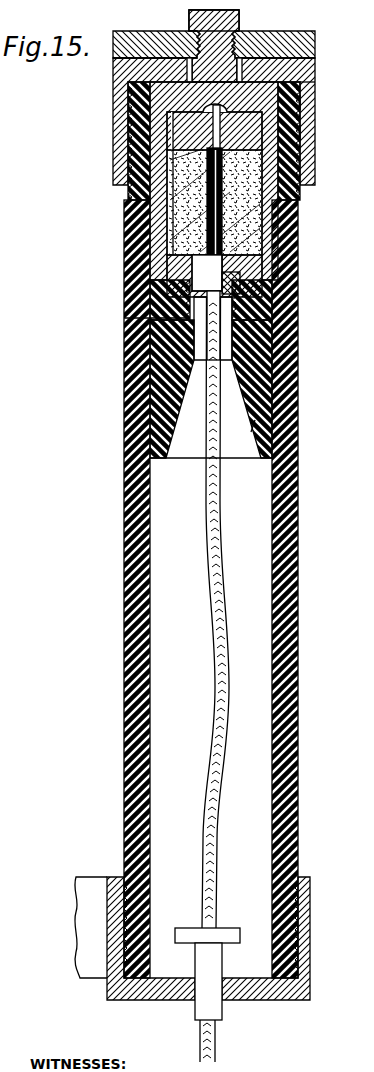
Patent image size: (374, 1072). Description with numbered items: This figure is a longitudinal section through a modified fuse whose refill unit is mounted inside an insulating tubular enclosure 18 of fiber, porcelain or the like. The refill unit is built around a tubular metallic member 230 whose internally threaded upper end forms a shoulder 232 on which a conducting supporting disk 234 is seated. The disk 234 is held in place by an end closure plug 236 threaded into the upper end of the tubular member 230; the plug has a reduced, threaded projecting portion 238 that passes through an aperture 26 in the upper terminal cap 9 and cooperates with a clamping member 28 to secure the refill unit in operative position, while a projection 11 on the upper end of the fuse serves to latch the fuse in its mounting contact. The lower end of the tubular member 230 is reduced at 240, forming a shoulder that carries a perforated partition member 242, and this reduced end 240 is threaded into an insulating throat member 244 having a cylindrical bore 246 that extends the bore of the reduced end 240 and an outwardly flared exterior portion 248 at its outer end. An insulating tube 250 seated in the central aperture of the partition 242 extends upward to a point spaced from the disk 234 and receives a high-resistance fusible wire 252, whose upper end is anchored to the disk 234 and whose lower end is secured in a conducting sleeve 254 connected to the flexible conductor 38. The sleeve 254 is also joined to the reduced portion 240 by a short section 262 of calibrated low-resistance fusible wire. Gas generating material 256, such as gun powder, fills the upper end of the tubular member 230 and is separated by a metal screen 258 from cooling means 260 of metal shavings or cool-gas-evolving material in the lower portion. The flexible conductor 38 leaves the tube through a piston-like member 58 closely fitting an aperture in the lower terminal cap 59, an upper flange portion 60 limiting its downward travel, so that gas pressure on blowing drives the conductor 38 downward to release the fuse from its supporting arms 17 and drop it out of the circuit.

The terminal cap 9 is at (305, 135).
The projection 11 is at (229, 19).
The arms 17 is at (85, 877).
The tubular enclosure 18 is at (299, 507).
The aperture 26 is at (243, 60).
The clamping member 28 is at (124, 33).
The flexible conductor 38 is at (216, 1056).
The piston-like member 58 is at (214, 1010).
The terminal cap 59 is at (305, 941).
The upper flange portion 60 is at (227, 937).
The tubular metallic member 230 is at (258, 232).
The shoulder 232 is at (302, 150).
The supporting disk 234 is at (300, 100).
The end closure plug 236 is at (298, 71).
The projecting portion 238 is at (188, 31).
The reduced end 240 is at (300, 318).
The perforated partition member 242 is at (300, 262).
The insulating throat member 244 is at (297, 383).
The cylindrical bore 246 is at (298, 346).
The outwardly flared exterior portion 248 is at (251, 432).
The insulating tube 250 is at (300, 240).
The high-resistance fusible wire 252 is at (210, 133).
The conducting sleeve 254 is at (125, 318).
The gas generating material 256 is at (175, 123).
The metal screen 258 is at (175, 160).
The cooling means 260 is at (167, 230).
The short section of fusible wire 262 is at (300, 290).